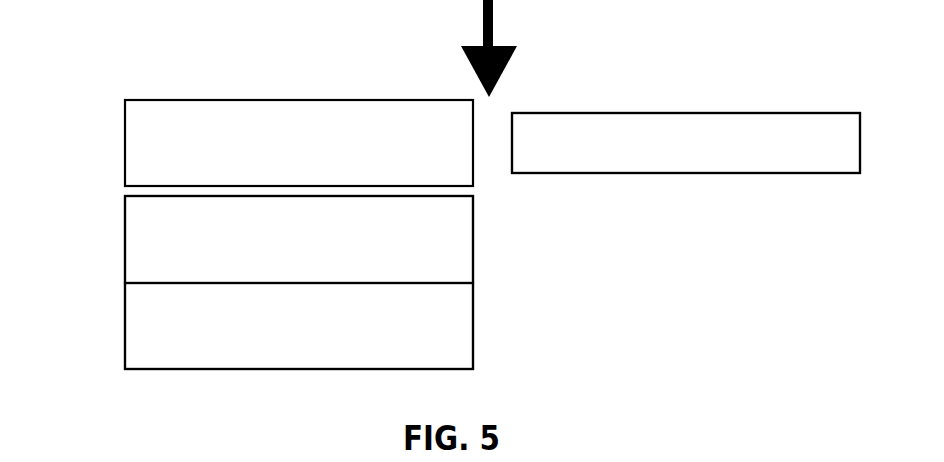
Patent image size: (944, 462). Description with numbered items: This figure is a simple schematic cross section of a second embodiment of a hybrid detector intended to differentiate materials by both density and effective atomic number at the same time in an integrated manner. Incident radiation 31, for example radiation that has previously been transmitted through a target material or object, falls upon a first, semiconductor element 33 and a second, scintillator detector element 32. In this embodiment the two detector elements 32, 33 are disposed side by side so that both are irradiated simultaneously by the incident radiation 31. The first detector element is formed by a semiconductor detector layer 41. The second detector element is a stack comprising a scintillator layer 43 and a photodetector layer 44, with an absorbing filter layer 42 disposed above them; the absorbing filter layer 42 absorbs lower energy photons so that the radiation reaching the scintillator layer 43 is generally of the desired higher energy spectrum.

The incident radiation 31 is at (592, 37).
The scintillator detector element 32 is at (85, 240).
The semiconductor element 33 is at (689, 210).
The semiconductor detector layer 41 is at (704, 160).
The absorbing filter layer 42 is at (317, 164).
The scintillator layer 43 is at (317, 257).
The photodetector layer 44 is at (317, 346).